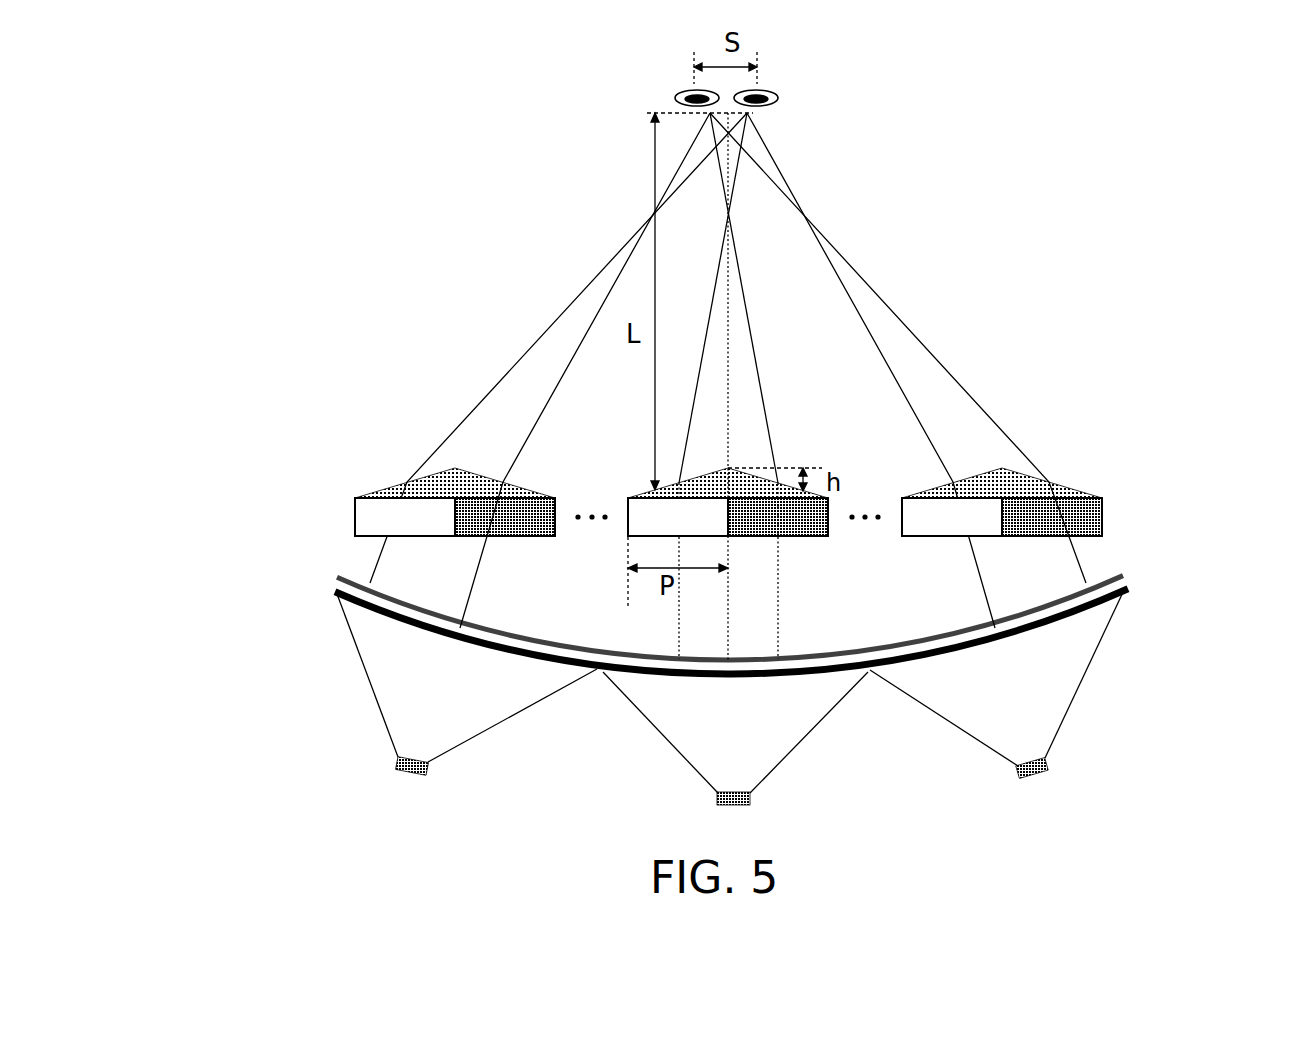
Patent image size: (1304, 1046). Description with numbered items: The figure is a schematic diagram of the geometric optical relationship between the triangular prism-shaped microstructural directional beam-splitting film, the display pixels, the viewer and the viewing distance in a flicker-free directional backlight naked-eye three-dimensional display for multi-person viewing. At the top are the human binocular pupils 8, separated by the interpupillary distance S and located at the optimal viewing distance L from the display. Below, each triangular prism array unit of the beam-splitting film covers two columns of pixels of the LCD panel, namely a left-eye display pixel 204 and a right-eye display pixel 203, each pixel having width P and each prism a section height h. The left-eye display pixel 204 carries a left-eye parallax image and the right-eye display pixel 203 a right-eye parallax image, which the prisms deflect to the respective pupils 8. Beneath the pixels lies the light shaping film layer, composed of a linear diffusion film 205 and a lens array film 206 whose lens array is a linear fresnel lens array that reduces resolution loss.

The human binocular pupils 8 is at (767, 85).
The right-eye display pixel 203 is at (1084, 519).
The left-eye display pixel 204 is at (379, 518).
The linear diffusion film 205 is at (335, 580).
The lens array film 206 is at (1127, 590).